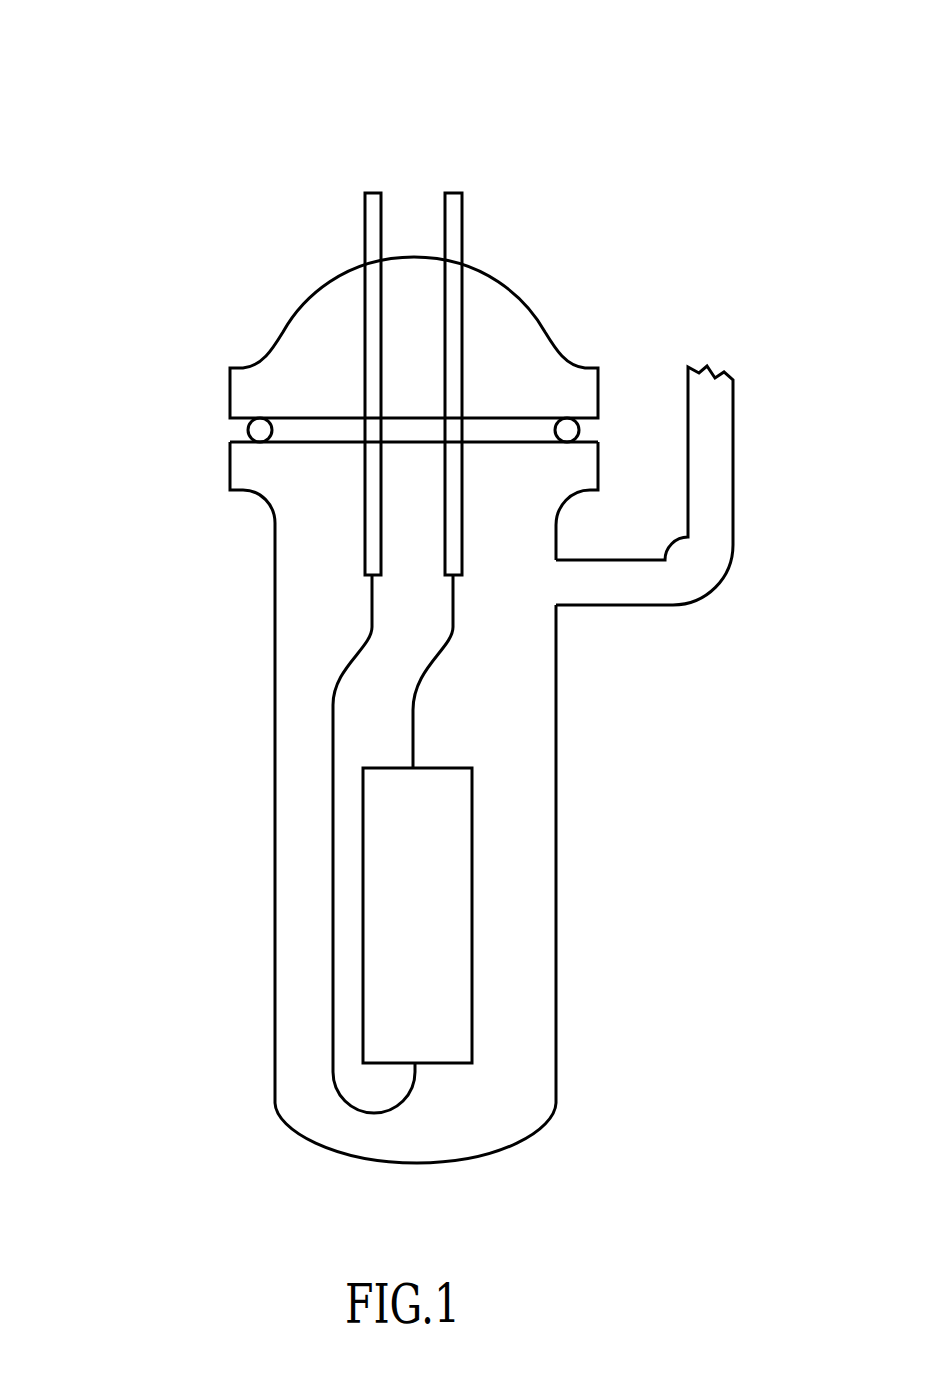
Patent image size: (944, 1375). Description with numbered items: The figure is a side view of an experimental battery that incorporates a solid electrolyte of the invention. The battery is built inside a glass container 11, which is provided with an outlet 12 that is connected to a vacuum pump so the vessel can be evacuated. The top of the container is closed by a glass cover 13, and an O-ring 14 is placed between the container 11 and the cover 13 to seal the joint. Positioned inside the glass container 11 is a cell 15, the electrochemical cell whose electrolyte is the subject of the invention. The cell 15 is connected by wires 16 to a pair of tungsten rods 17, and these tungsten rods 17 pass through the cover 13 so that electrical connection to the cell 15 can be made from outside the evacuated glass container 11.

The glass container 11 is at (323, 622).
The outlet 12 is at (712, 512).
The glass cover 13 is at (347, 312).
The O-ring 14 is at (238, 430).
The cell 15 is at (417, 912).
The wires 16 is at (342, 701).
The tungsten rods 17 is at (451, 183).